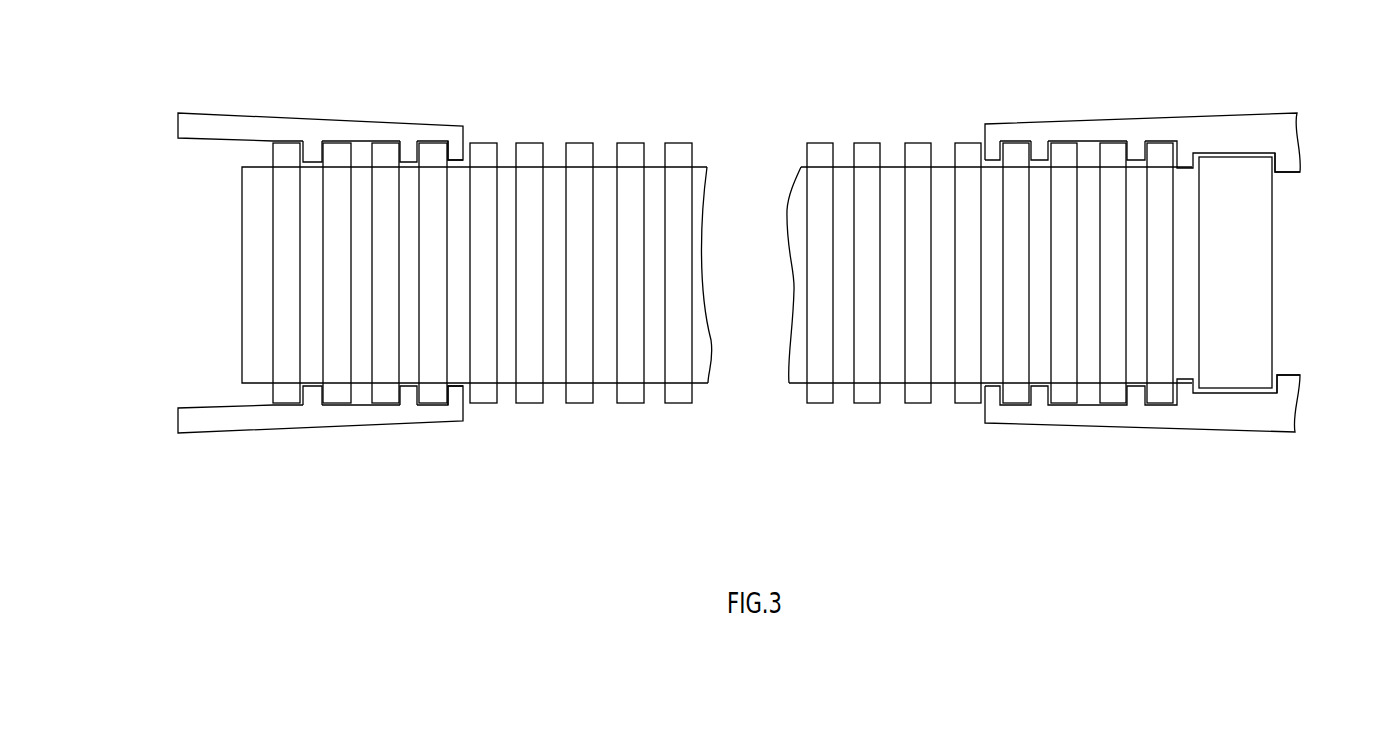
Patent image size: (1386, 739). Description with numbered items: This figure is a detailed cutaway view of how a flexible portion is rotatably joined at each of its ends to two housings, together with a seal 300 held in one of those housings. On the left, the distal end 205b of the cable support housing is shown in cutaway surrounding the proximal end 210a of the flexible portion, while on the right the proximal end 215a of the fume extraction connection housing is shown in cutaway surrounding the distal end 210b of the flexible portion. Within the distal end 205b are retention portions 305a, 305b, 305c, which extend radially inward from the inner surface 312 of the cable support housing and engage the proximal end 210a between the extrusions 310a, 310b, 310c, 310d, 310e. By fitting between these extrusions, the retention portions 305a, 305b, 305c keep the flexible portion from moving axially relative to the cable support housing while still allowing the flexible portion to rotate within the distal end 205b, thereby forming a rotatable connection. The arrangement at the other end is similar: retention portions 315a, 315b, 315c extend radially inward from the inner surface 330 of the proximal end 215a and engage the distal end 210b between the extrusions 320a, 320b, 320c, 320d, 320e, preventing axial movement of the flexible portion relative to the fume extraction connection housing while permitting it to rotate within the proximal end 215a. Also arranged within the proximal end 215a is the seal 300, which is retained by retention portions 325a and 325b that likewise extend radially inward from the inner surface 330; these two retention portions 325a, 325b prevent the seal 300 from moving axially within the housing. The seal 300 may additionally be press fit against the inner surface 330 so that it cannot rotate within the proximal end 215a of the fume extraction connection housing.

The seal 300 is at (1265, 273).
The distal end of cable support housing 205b is at (207, 433).
The proximal end of flexible portion 210a is at (607, 370).
The distal end of flexible portion 210b is at (918, 403).
The proximal end of fume extraction connection housing 215a is at (1210, 430).
The retention portion 305a is at (312, 150).
The retention portion 305b is at (408, 150).
The retention portion 305c is at (464, 128).
The extrusion 310a is at (285, 142).
The extrusion 310b is at (334, 142).
The extrusion 310c is at (384, 142).
The extrusion 310d is at (435, 143).
The extrusion 310e is at (483, 142).
The inner surface 312 is at (197, 140).
The retention portion 315a is at (988, 152).
The retention portion 315b is at (1038, 152).
The retention portion 315c is at (1133, 150).
The extrusion 320a is at (970, 143).
The extrusion 320b is at (1013, 143).
The extrusion 320c is at (1065, 143).
The extrusion 320d is at (1112, 143).
The extrusion 320e is at (1158, 142).
The retention portion 325a is at (1185, 157).
The retention portion 325b is at (1287, 160).
The inner surface 330 is at (1235, 153).